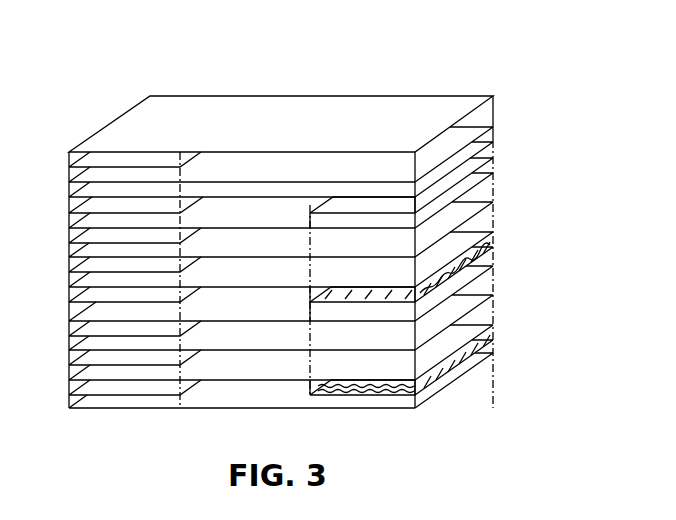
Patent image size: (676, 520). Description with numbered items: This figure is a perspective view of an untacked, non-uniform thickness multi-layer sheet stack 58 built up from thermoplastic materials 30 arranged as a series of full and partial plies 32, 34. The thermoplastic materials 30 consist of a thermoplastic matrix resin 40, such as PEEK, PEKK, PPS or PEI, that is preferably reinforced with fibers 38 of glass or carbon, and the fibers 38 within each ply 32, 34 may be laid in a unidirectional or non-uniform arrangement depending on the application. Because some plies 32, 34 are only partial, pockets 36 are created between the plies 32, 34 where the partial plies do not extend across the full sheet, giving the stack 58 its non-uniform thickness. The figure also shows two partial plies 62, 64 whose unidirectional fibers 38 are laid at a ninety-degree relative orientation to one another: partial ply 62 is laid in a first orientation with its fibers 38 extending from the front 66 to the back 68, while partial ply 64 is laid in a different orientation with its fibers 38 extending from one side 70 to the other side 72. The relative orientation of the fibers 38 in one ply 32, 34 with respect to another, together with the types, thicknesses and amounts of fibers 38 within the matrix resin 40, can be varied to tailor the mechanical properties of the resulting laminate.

The multi-layer sheet stack 58 is at (176, 60).
The thermoplastic materials 30 is at (398, 106).
The ply 32 is at (449, 105).
The ply 34 is at (472, 168).
The pockets 36 is at (268, 217).
The fibers 38 is at (443, 275).
The matrix resin 40 is at (489, 250).
The partial ply 62 is at (440, 300).
The partial ply 64 is at (443, 386).
The front 66 is at (480, 355).
The back 68 is at (473, 242).
The side 70 is at (318, 386).
The side 72 is at (437, 386).